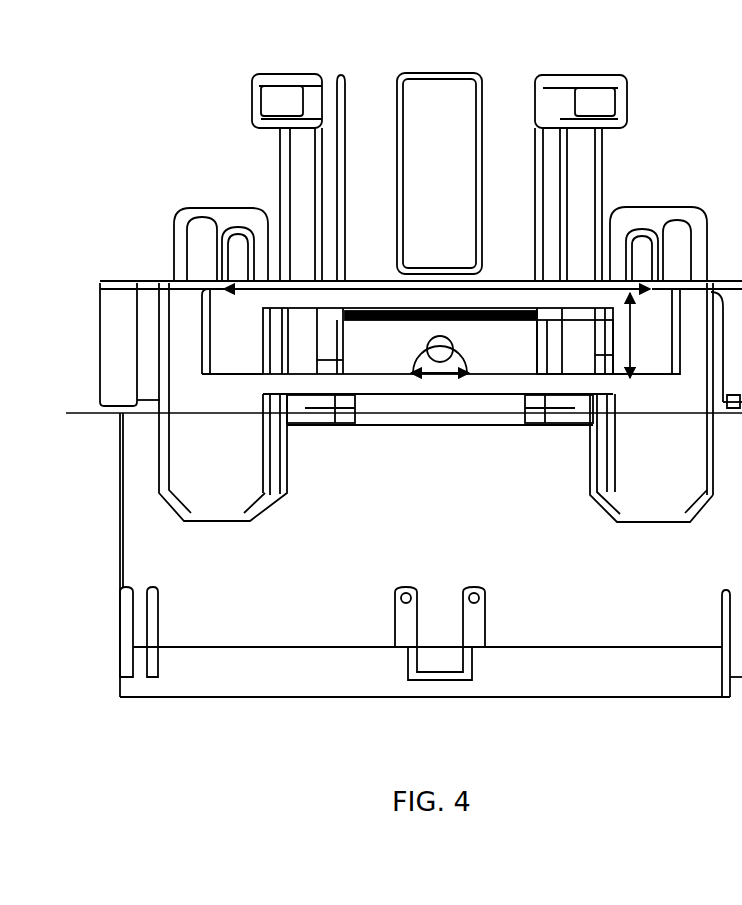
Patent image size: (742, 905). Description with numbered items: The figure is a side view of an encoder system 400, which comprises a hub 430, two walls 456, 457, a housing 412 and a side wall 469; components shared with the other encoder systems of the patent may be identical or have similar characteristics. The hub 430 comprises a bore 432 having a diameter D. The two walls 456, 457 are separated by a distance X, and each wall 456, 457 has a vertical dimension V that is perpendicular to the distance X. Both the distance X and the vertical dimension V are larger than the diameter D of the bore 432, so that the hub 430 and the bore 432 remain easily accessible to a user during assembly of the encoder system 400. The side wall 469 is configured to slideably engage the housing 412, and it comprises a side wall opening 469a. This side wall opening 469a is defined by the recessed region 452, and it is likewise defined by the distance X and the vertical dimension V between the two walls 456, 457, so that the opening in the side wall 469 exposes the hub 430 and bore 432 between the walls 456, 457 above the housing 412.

The encoder system 400 is at (141, 54).
The housing 412 is at (362, 520).
The hub 430 is at (482, 352).
The bore 432 is at (447, 353).
The recessed region 452 is at (580, 357).
The wall 456 is at (651, 355).
The wall 457 is at (230, 333).
The side wall 469 is at (222, 497).
The side wall opening 469a is at (367, 386).